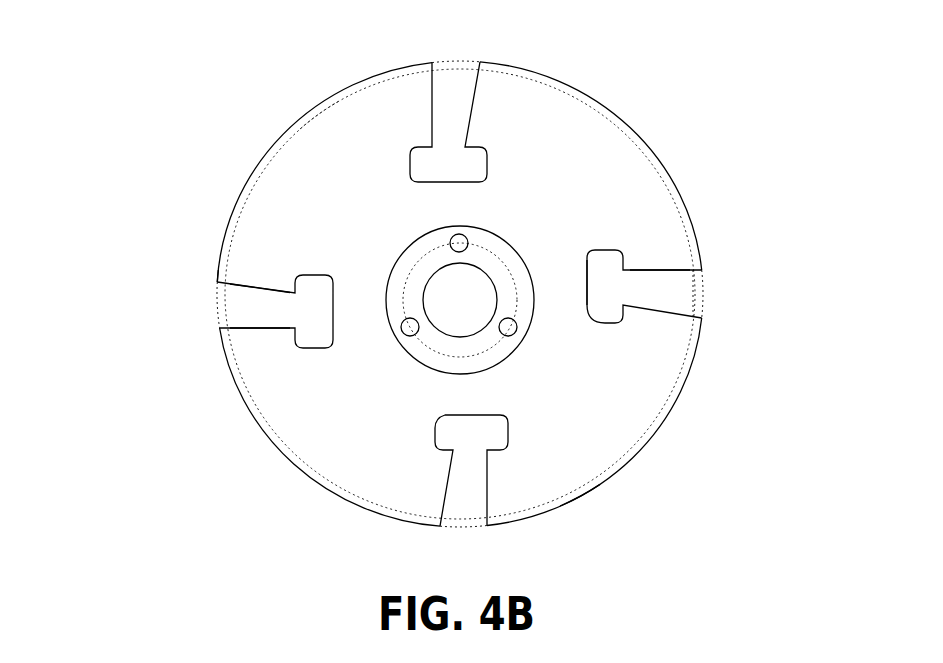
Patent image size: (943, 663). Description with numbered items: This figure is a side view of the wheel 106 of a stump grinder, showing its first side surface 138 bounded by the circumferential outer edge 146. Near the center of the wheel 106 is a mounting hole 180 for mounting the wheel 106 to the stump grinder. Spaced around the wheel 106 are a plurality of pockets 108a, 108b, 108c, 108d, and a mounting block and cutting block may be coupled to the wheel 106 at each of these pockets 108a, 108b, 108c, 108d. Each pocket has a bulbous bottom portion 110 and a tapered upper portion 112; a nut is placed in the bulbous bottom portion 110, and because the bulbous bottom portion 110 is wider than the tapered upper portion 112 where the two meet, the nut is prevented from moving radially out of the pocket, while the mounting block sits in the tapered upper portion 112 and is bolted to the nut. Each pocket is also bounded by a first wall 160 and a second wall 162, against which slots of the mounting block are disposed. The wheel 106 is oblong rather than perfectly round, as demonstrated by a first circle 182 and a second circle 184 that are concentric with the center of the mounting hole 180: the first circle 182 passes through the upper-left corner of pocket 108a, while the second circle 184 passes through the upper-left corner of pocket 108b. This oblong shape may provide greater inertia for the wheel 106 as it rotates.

The wheel 106 is at (716, 91).
The pocket 108a is at (200, 299).
The pocket 108b is at (456, 66).
The pocket 108c is at (708, 277).
The pocket 108d is at (459, 540).
The bulbous bottom portion 110 is at (598, 297).
The tapered upper portion 112 is at (660, 285).
The first side surface 138 is at (331, 165).
The circumferential outer edge 146 is at (618, 487).
The first wall 160 is at (272, 330).
The second wall 162 is at (280, 292).
The mounting hole 180 is at (457, 288).
The first circle 182 is at (217, 283).
The second circle 184 is at (332, 102).